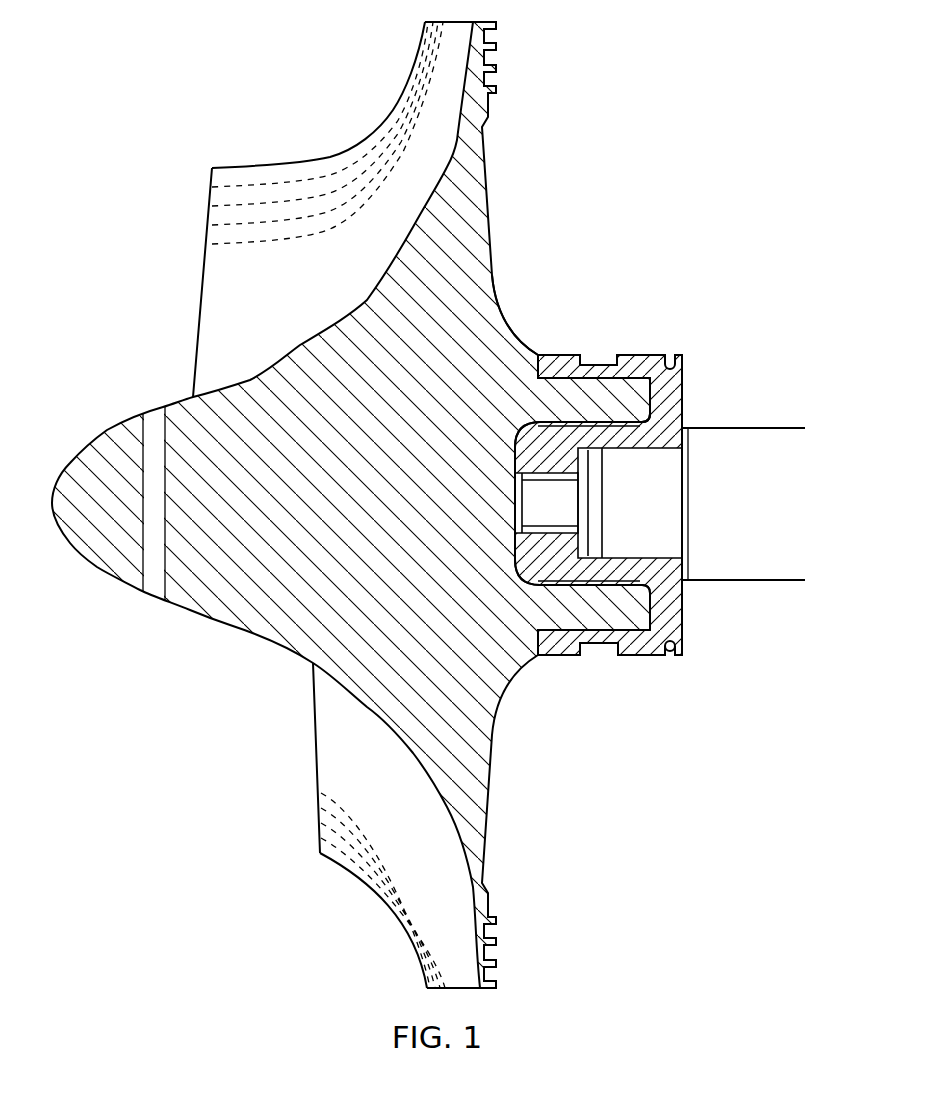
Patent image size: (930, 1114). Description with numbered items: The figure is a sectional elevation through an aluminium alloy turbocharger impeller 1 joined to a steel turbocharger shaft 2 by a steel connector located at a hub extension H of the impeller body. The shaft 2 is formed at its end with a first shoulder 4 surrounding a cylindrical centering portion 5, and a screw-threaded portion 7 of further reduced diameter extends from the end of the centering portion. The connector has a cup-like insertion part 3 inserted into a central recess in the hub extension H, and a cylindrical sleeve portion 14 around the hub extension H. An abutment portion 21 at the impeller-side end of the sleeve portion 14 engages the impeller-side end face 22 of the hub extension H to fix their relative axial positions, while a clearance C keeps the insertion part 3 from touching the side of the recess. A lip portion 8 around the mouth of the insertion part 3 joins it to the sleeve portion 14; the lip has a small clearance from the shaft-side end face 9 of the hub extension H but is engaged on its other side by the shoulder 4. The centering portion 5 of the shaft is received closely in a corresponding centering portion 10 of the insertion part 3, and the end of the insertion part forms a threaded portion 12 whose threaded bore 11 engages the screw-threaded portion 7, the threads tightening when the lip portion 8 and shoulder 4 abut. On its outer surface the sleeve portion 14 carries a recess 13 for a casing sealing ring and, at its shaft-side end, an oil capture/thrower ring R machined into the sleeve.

The impeller 1 is at (462, 203).
The turbocharger shaft 2 is at (723, 450).
The insertion part 3 is at (670, 356).
The first shoulder 4 is at (640, 545).
The centering portion 5 is at (683, 597).
The screw-threaded portion 7 is at (557, 512).
The lip portion 8 is at (668, 402).
The shaft-side end face 9 is at (662, 397).
The centering portion 10 is at (600, 423).
The threaded bore 11 is at (656, 652).
The threaded portion 12 is at (562, 535).
The recess 13 is at (597, 643).
The sleeve portion 14 is at (585, 354).
The abutment portion 21 is at (553, 352).
The impeller-side end face 22 is at (530, 358).
The hub extension H is at (538, 390).
The clearance C is at (643, 402).
The oil capture/thrower ring R is at (677, 353).